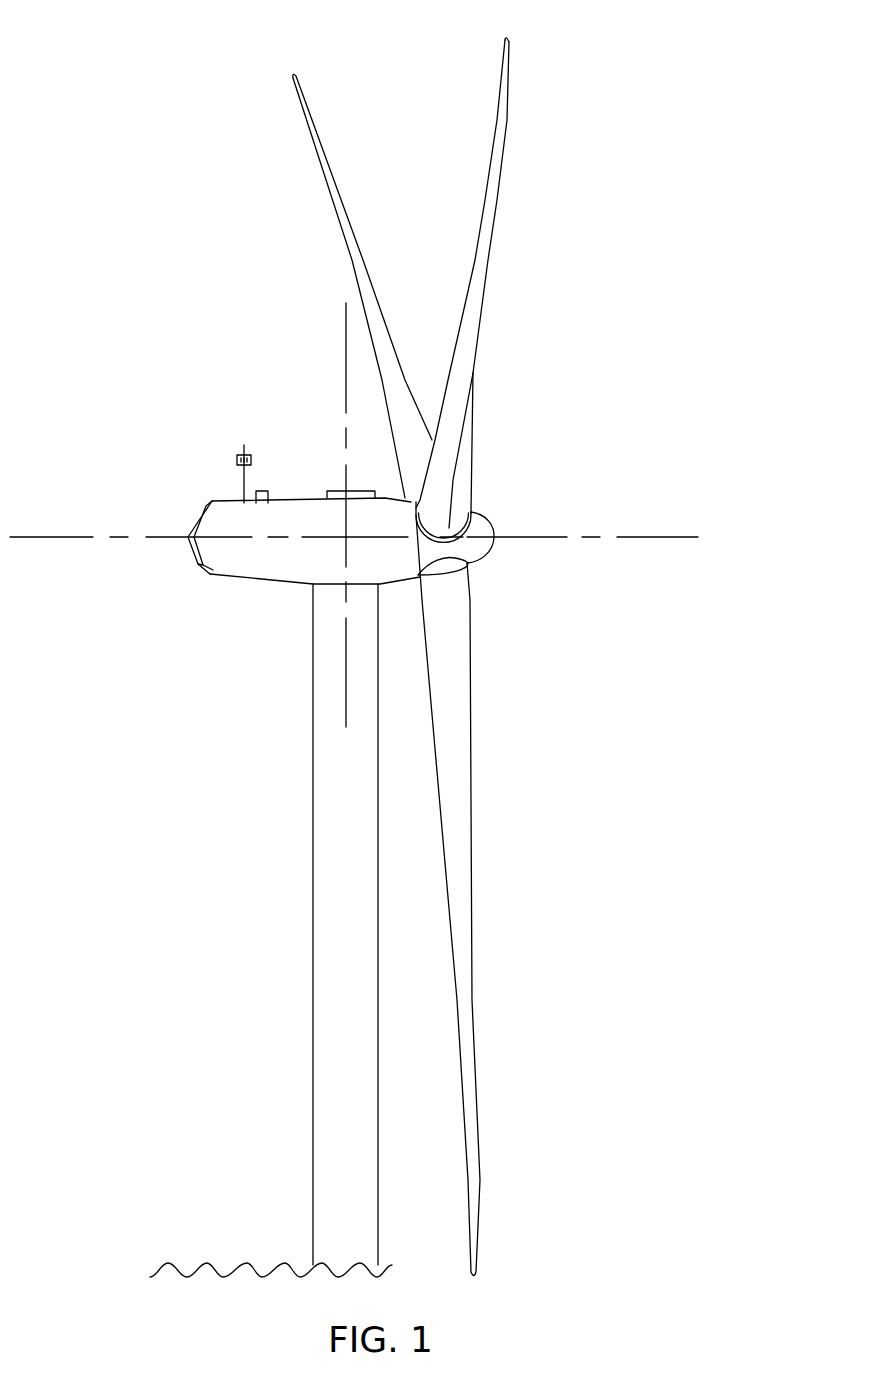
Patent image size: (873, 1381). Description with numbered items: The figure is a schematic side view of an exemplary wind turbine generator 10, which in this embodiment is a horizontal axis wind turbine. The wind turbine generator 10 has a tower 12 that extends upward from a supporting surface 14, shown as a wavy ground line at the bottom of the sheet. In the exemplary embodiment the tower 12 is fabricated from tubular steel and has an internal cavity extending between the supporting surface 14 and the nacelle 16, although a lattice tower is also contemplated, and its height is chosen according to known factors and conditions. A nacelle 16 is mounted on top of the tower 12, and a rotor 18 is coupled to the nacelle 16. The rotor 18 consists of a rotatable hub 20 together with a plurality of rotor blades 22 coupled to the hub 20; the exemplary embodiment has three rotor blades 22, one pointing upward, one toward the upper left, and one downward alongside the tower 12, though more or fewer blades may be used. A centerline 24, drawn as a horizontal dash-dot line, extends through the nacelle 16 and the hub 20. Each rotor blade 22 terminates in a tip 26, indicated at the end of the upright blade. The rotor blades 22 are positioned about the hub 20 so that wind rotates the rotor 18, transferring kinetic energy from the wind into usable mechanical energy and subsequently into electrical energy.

The wind turbine generator 10 is at (160, 300).
The tower 12 is at (313, 875).
The supporting surface 14 is at (222, 1277).
The nacelle 16 is at (258, 580).
The rotor 18 is at (485, 597).
The rotatable hub 20 is at (490, 550).
The rotor blades 22 is at (330, 162).
The centerline 24 is at (640, 538).
The tip 26 is at (508, 38).